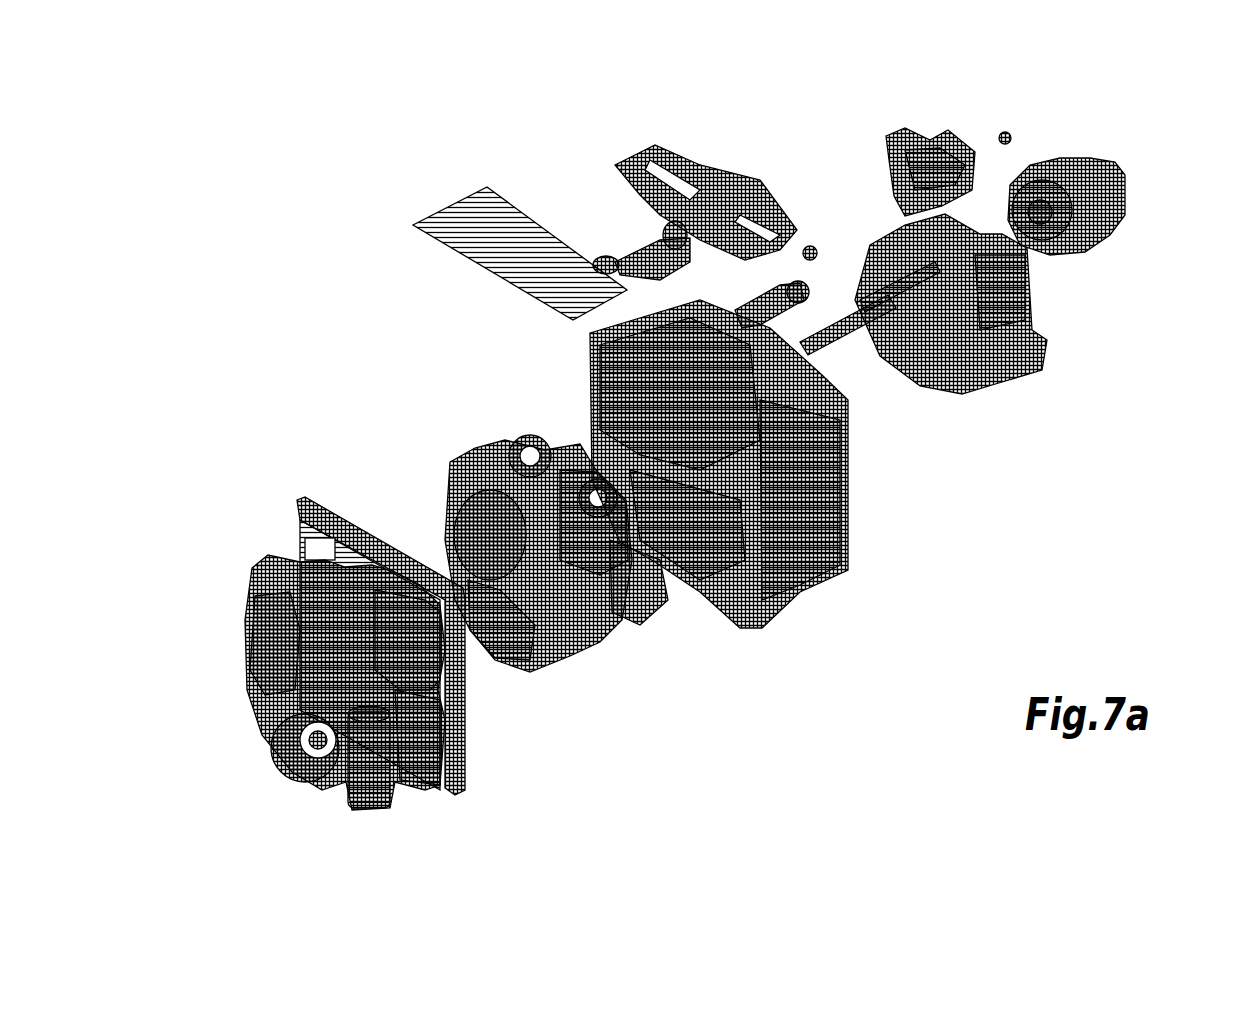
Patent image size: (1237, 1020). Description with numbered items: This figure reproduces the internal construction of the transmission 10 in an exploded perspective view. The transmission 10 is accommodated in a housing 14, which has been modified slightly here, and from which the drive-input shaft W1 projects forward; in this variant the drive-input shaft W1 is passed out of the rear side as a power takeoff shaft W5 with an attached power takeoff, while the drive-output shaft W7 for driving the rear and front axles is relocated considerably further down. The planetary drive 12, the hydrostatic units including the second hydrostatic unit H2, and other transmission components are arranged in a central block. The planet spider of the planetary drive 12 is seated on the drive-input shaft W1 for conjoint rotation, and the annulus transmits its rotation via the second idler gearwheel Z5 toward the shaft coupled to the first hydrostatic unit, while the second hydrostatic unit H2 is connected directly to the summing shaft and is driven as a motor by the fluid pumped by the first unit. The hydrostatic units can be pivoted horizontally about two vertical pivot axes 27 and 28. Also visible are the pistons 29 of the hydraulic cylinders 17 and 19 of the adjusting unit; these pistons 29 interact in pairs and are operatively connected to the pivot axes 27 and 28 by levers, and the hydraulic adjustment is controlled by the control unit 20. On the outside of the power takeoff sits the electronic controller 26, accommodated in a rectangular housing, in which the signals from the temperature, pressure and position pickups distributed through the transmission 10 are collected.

The transmission 10 is at (290, 267).
The planetary drive 12 is at (527, 490).
The housing 14 is at (818, 500).
The hydraulic cylinder 17 is at (412, 622).
The hydraulic cylinder 19 is at (300, 553).
The control unit 20 is at (950, 163).
The electronic controller 26 is at (1007, 275).
The pivot axis 27 is at (530, 452).
The pivot axis 28 is at (600, 498).
The pistons 29 is at (667, 230).
The drive-input shaft W1 is at (280, 652).
The power takeoff shaft W5 is at (1128, 165).
The drive-output shaft W7 is at (268, 773).
The second idler gearwheel Z5 is at (453, 517).
The second hydrostatic unit H2 is at (643, 578).